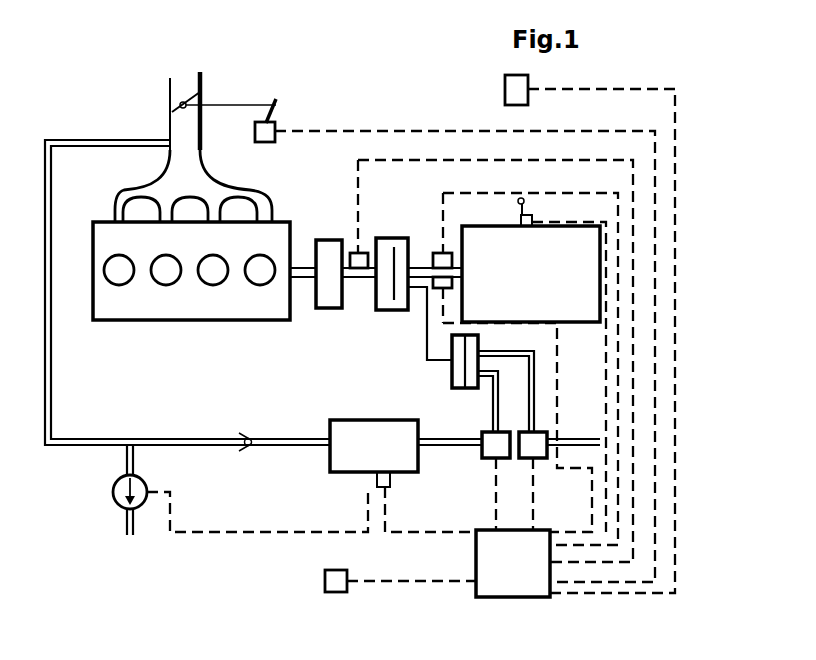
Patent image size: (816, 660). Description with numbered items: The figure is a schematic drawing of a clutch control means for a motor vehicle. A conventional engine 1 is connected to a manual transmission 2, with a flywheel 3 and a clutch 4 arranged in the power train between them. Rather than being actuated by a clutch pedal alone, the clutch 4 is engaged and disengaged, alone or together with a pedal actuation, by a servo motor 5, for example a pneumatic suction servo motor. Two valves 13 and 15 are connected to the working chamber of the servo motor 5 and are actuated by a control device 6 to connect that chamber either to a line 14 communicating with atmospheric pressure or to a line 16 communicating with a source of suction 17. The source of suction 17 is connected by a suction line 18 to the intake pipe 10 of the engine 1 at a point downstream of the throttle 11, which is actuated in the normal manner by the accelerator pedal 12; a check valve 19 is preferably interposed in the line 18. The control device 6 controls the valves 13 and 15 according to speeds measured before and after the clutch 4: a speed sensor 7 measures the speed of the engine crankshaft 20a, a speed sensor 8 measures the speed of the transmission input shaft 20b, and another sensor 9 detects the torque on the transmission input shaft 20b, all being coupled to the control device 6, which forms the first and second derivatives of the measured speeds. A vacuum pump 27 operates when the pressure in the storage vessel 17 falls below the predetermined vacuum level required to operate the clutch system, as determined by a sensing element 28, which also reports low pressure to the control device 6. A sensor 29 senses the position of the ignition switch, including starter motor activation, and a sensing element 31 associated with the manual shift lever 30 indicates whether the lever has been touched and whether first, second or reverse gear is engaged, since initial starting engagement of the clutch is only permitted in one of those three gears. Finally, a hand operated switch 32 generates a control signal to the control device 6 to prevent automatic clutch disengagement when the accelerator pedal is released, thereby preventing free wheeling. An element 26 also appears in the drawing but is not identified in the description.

The engine 1 is at (202, 321).
The manual transmission 2 is at (570, 323).
The flywheel 3 is at (330, 309).
The clutch 4 is at (390, 311).
The servo motor 5 is at (460, 386).
The control device 6 is at (510, 598).
The speed sensor 7 is at (355, 252).
The speed sensor 8 is at (440, 252).
The sensor 9 is at (452, 282).
The intake pipe 10 is at (205, 147).
The throttle 11 is at (203, 88).
The accelerator pedal 12 is at (280, 105).
The valve 13 is at (537, 456).
The line 14 is at (580, 438).
The valve 15 is at (492, 456).
The line 16 is at (435, 446).
The source of suction 17 is at (360, 473).
The suction line 18 is at (297, 446).
The check valve 19 is at (248, 447).
The engine crankshaft 20a is at (297, 278).
The transmission input shaft 20b is at (405, 267).
The throttle position sensor 26 is at (278, 138).
The vacuum pump 27 is at (114, 500).
The sensing element 28 is at (390, 487).
The sensor 29 is at (505, 85).
The manual shift lever 30 is at (517, 202).
The sensing element 31 is at (533, 220).
The hand operated switch 32 is at (325, 580).